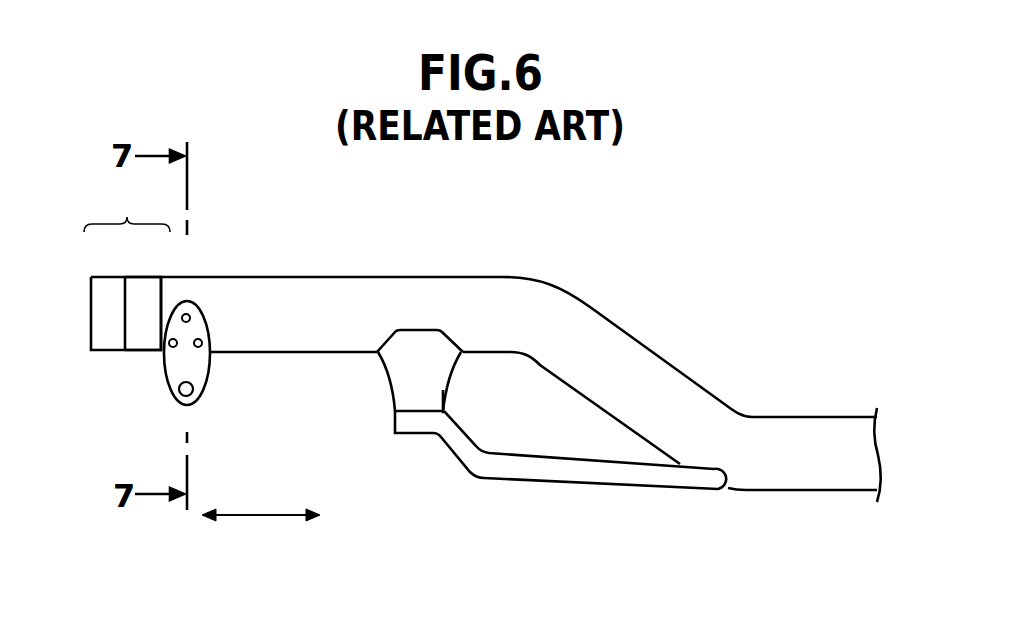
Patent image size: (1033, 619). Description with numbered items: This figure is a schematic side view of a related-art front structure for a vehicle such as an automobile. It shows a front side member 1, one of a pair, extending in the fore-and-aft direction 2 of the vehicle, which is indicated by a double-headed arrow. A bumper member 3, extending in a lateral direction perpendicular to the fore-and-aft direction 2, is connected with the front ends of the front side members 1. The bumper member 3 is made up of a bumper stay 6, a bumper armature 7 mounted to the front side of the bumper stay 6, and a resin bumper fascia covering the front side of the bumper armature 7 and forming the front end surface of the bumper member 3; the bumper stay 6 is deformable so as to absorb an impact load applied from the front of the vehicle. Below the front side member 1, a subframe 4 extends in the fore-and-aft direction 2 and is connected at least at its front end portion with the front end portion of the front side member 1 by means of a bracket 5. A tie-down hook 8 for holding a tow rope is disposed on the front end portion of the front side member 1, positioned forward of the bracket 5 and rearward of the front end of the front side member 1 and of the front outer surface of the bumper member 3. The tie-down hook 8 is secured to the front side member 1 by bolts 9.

The front side member 1 is at (315, 293).
The fore-and-aft direction 2 is at (262, 516).
The bumper member 3 is at (127, 266).
The subframe 4 is at (472, 479).
The bracket 5 is at (390, 386).
The bumper stay 6 is at (146, 281).
The bumper armature 7 is at (104, 281).
The tie-down hook 8 is at (186, 398).
The bolts 9 is at (200, 339).